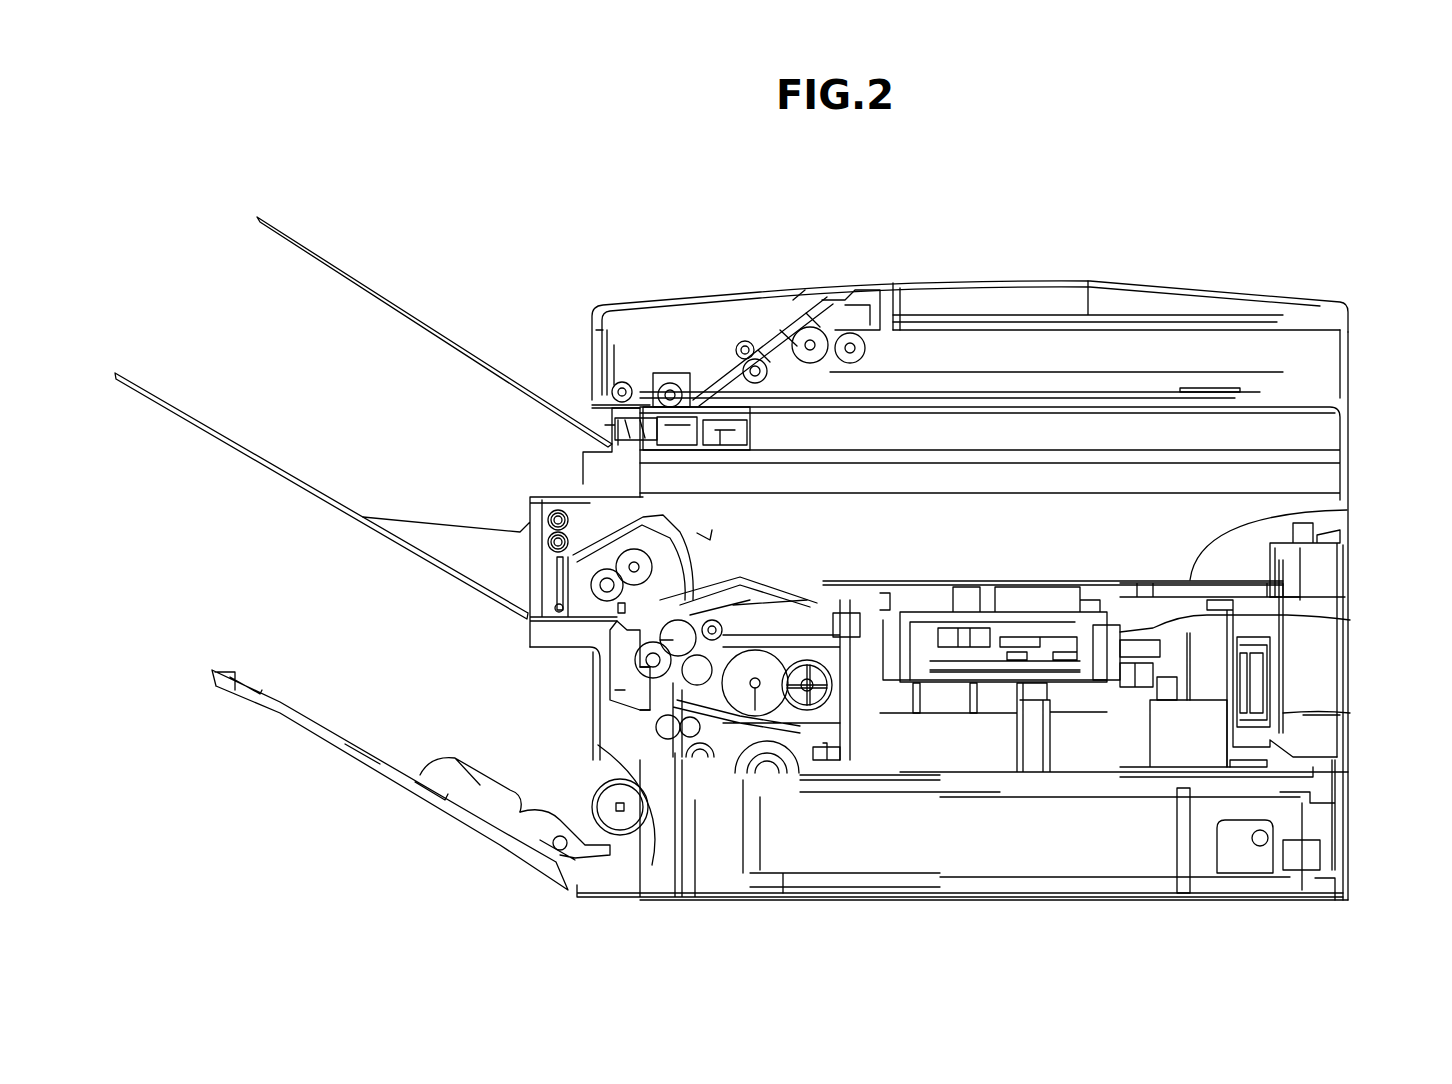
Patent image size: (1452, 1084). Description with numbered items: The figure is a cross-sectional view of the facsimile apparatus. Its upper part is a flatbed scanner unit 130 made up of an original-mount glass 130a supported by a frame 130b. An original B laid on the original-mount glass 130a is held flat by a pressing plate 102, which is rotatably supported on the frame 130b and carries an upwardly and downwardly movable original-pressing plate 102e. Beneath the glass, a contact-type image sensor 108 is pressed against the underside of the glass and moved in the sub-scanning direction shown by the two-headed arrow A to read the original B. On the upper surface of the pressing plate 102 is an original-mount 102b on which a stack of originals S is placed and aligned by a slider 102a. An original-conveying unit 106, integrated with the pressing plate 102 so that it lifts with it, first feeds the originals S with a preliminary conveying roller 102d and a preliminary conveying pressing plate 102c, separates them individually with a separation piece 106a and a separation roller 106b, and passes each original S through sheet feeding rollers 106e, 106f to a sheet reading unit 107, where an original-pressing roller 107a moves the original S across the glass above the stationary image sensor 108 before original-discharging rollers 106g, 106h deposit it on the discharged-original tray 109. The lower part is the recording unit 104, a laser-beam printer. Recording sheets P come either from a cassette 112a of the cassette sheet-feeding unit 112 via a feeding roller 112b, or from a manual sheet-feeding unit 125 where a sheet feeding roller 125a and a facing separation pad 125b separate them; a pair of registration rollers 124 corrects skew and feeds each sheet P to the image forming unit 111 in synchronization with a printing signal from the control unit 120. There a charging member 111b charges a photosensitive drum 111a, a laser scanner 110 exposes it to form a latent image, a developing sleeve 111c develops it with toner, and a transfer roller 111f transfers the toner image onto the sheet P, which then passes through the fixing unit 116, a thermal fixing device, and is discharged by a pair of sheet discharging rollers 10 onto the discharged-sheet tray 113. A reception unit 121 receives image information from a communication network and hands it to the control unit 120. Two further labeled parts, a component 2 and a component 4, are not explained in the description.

The image forming apparatus main body 2 is at (560, 490).
The frame 4 is at (363, 517).
The pair of sheet discharging rollers 10 is at (598, 583).
The pressing plate 102 is at (1157, 357).
The slider 102a is at (1005, 290).
The original-mount 102b is at (1103, 333).
The preliminary conveying pressing plate 102c is at (882, 290).
The preliminary conveying roller 102d is at (925, 345).
The original-pressing plate 102e is at (1220, 397).
The recording unit 104 is at (990, 758).
The original-conveying unit 106 is at (647, 320).
The separation piece 106a is at (817, 293).
The separation roller 106b is at (832, 358).
The sheet feeding roller 106e is at (777, 358).
The sheet feeding roller 106f is at (753, 362).
The original-discharging roller 106g is at (593, 313).
The original-discharging roller 106h is at (610, 418).
The sheet reading unit 107 is at (710, 392).
The original-pressing roller 107a is at (647, 322).
The contact-type image sensor 108 is at (683, 385).
The discharged-original tray 109 is at (410, 313).
The laser scanner 110 is at (1150, 630).
The image forming unit 111 is at (753, 630).
The photosensitive drum 111a is at (530, 647).
The charging member 111b is at (755, 625).
The developing sleeve 111c is at (757, 630).
The transfer roller 111f is at (593, 660).
The cassette sheet-feeding unit 112 is at (733, 782).
The cassette 112a is at (968, 895).
The feeding roller 112b is at (797, 762).
The discharged-sheet tray 113 is at (217, 430).
The fixing unit 116 is at (543, 573).
The control unit 120 is at (1350, 514).
The reception unit 121 is at (1283, 712).
The pair of registration rollers 124 is at (656, 727).
The manual sheet-feeding unit 125 is at (520, 815).
The sheet feeding roller 125a is at (587, 830).
The separation pad 125b is at (632, 832).
The flatbed scanner unit 130 is at (1318, 425).
The original-mount glass 130a is at (1313, 405).
The frame 130b is at (1348, 378).
The two-headed arrow A is at (773, 403).
The original B is at (1277, 400).
The originals S is at (1177, 393).
The recording sheets P is at (1163, 810).